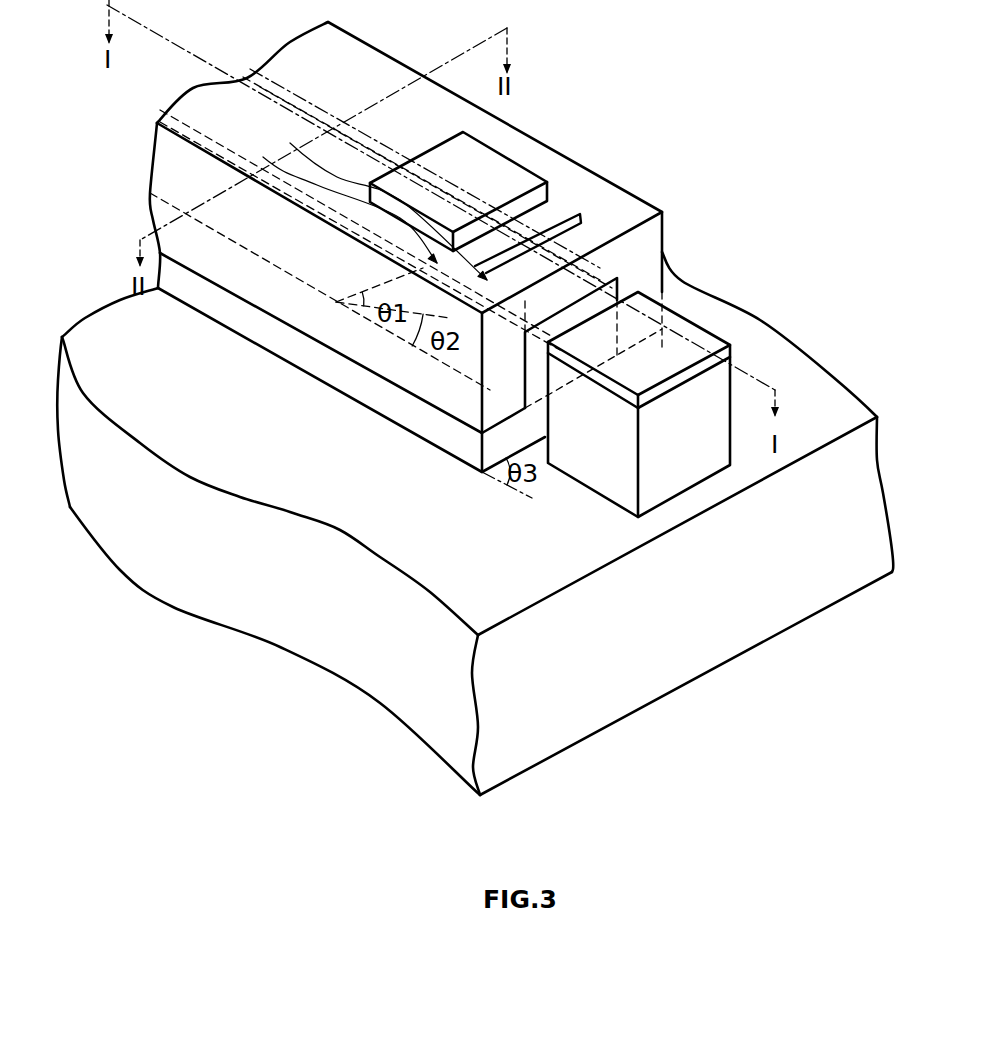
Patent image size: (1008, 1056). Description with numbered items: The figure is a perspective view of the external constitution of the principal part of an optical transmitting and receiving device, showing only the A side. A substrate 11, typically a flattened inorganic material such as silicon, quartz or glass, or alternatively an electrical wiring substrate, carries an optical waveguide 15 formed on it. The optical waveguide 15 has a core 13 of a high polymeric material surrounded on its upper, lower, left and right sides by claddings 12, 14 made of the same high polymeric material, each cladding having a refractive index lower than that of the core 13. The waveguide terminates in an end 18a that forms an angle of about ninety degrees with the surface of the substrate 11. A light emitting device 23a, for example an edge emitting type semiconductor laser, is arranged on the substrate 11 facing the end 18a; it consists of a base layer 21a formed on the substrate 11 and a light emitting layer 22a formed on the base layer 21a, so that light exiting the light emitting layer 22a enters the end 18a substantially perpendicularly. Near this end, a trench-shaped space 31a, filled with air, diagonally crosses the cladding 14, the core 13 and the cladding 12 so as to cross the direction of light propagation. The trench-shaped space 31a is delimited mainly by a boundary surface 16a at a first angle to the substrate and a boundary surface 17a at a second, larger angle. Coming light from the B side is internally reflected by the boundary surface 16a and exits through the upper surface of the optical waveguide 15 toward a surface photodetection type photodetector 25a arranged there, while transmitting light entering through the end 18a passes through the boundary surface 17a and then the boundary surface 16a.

The substrate 11 is at (720, 618).
The cladding 12 is at (325, 364).
The core 13 is at (536, 366).
The cladding 14 is at (502, 392).
The optical waveguide 15 is at (358, 385).
The boundary surface 16a is at (263, 157).
The boundary surface 17a is at (290, 143).
The end 18a is at (575, 312).
The base layer 21a is at (683, 417).
The light emitting layer 22a is at (733, 363).
The light emitting device 23a is at (733, 381).
The photodetector 25a is at (477, 163).
The trench-shaped space 31a is at (560, 223).